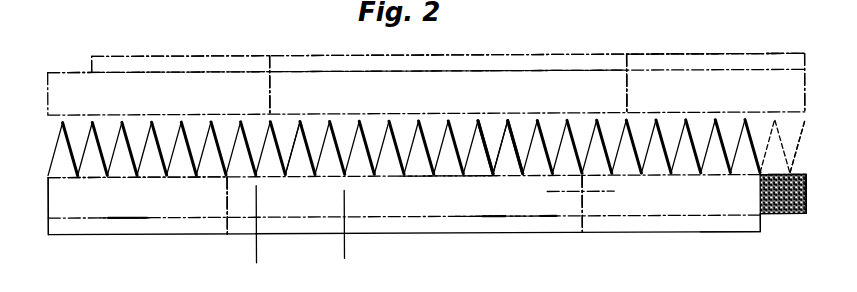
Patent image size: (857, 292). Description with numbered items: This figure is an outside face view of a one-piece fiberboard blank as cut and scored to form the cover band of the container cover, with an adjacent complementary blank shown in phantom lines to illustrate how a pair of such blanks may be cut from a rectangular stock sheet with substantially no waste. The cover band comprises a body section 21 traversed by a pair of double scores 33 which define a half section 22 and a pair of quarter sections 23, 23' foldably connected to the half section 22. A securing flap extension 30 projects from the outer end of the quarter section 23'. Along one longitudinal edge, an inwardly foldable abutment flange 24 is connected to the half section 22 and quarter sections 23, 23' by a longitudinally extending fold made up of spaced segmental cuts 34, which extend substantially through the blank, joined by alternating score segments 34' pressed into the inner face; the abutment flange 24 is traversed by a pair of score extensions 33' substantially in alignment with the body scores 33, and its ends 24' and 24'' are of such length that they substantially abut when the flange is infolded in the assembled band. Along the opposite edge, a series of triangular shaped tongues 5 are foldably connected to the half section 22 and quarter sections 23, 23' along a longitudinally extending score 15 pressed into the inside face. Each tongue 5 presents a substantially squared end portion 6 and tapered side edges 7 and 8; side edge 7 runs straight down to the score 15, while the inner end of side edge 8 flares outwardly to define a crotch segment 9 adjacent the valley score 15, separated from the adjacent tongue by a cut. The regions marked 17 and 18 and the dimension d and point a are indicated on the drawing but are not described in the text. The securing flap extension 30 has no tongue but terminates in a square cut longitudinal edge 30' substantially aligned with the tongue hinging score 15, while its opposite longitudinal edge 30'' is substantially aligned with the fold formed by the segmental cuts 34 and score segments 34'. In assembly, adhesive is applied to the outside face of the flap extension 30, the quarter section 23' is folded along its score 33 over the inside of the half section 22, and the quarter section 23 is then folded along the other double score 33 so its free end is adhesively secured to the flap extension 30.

The securing tongue 5 is at (522, 130).
The squared end portion 6 is at (300, 120).
The tapered side edge 7 is at (306, 136).
The tapered side edge 8 is at (293, 137).
The crotch segment 9 is at (345, 197).
The longitudinal score 15 is at (177, 180).
The tooth flank 17 is at (458, 119).
The tooth flank 18 is at (472, 122).
The body section 21 is at (47, 200).
The half section 22 is at (449, 137).
The quarter section 23 is at (462, 130).
The quarter section 23' is at (372, 138).
The abutment flange 24 is at (448, 143).
The abutment flange end 24' is at (424, 143).
The abutment flange end 24'' is at (424, 149).
The securing flap extension 30 is at (783, 220).
The square cut longitudinal edge 30' is at (803, 146).
The longitudinal edge 30'' is at (794, 232).
The double score 33 is at (429, 131).
The score extension 33' is at (405, 144).
The segmental cut 34 is at (332, 245).
The score segment 34' is at (317, 229).
The depth d is at (792, 195).
The point a is at (732, 236).